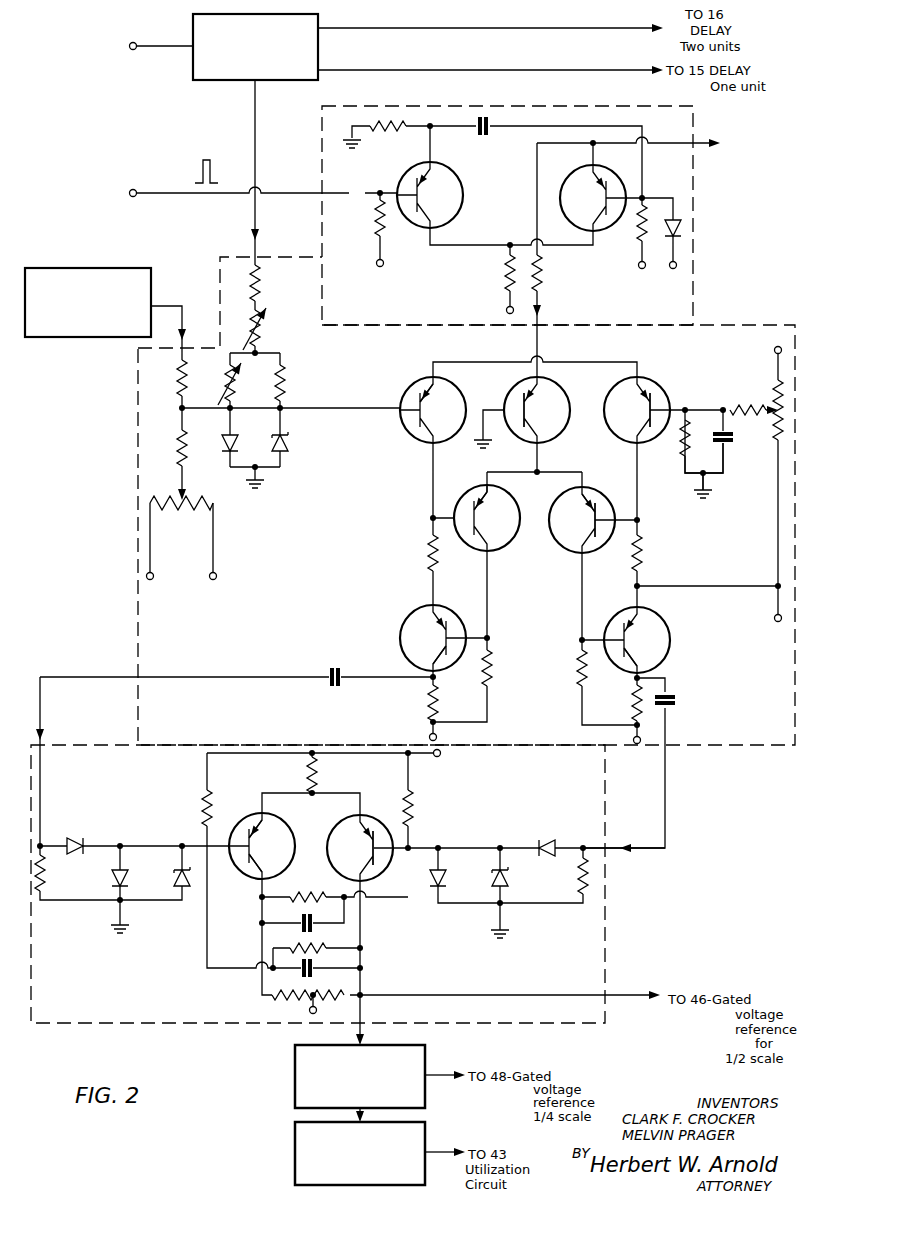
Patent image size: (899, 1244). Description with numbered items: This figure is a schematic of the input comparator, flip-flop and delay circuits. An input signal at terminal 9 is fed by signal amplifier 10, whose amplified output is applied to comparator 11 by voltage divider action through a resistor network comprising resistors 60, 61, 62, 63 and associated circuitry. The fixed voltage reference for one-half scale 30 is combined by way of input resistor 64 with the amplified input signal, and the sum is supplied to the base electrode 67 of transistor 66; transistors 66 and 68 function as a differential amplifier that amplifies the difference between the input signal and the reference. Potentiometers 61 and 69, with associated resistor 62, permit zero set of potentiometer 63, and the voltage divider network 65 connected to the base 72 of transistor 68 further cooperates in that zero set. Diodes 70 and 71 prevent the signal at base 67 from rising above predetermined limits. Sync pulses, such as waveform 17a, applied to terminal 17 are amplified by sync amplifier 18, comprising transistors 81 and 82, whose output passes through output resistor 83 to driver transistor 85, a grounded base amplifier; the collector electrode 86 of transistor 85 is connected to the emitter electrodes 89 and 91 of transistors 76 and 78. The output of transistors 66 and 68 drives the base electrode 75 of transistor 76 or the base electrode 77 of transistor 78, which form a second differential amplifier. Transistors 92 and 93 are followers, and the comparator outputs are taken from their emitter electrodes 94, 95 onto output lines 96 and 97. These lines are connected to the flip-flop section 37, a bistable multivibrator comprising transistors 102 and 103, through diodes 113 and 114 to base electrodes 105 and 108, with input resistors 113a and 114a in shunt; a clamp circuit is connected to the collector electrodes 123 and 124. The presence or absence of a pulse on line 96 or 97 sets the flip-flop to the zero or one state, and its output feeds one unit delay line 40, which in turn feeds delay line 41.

The terminal 9 is at (134, 42).
The signal amplifier 10 is at (193, 26).
The comparator 11 is at (138, 462).
The terminal 17 is at (138, 188).
The waveform 17a is at (210, 161).
The sync amplifier 18 is at (693, 312).
The fixed voltage reference for one-half scale 30 is at (84, 268).
The flip-flop section 37 is at (606, 1008).
The delay unit 40 is at (295, 1086).
The delay unit 41 is at (295, 1154).
The resistor 60 is at (262, 270).
The potentiometer 61 is at (262, 328).
The resistor 62 is at (285, 388).
The potentiometer 63 is at (225, 384).
The input resistor 64 is at (176, 384).
The voltage divider network 65 is at (688, 488).
The transistor 66 is at (460, 386).
The base electrode 67 is at (412, 392).
The transistor 68 is at (655, 392).
The potentiometer 69 is at (186, 497).
The diode 70 is at (222, 452).
The diode 71 is at (288, 452).
The base 72 is at (665, 404).
The base electrode 75 is at (462, 500).
The transistor 76 is at (514, 500).
The base electrode 77 is at (612, 510).
The transistor 78 is at (592, 494).
The transistor 81 is at (463, 182).
The transistor 82 is at (575, 182).
The output resistor 83 is at (540, 281).
The driver transistor 85 is at (566, 390).
The collector electrode 86 is at (522, 428).
The emitter electrode 89 is at (478, 492).
The emitter electrode 91 is at (600, 500).
The transistor 92 is at (445, 610).
The transistor 93 is at (660, 624).
The emitter electrode 94 is at (410, 662).
The emitter electrode 95 is at (660, 658).
The output line 96 is at (236, 677).
The output line 97 is at (676, 724).
The transistor 102 is at (290, 828).
The transistor 103 is at (330, 875).
The base electrode 105 is at (240, 828).
The base electrode 108 is at (393, 862).
The diode 113 is at (78, 843).
The input resistor 113a is at (46, 860).
The diode 114 is at (548, 840).
The input resistor 114a is at (584, 878).
The collector electrode 123 is at (252, 878).
The collector electrode 124 is at (345, 882).